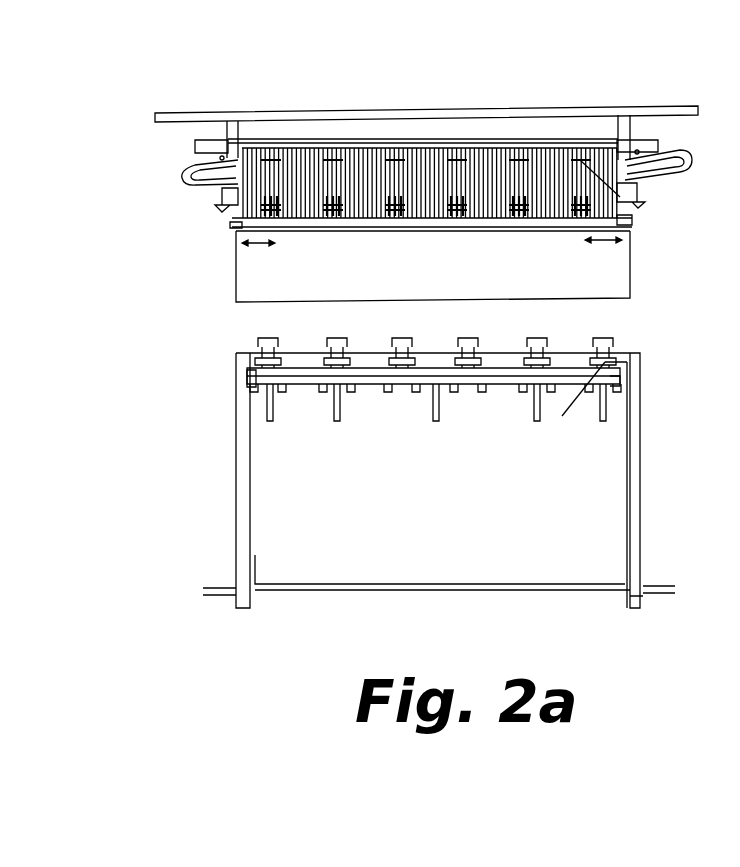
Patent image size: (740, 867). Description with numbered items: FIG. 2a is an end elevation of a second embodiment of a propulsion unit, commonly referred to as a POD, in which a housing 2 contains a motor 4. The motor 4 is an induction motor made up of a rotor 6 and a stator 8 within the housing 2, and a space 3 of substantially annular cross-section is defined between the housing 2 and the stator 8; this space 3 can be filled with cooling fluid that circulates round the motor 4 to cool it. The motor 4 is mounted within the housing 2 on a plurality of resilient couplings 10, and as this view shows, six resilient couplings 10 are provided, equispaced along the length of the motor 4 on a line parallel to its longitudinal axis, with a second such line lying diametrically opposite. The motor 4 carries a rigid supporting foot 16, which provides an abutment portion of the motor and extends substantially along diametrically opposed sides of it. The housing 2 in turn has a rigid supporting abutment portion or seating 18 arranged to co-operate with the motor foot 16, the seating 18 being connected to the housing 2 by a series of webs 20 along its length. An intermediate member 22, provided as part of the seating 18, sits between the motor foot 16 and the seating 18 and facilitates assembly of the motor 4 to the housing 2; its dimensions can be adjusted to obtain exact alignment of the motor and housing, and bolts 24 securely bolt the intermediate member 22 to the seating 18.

The housing 2 is at (650, 107).
The space 3 is at (428, 108).
The motor 4 is at (437, 226).
The rotor 6 is at (625, 190).
The stator 8 is at (588, 157).
The resilient couplings 10 is at (593, 384).
The supporting foot 16 is at (265, 318).
The seating 18 is at (252, 387).
The webs 20 is at (340, 422).
The intermediate member 22 is at (250, 375).
The bolts 24 is at (292, 386).